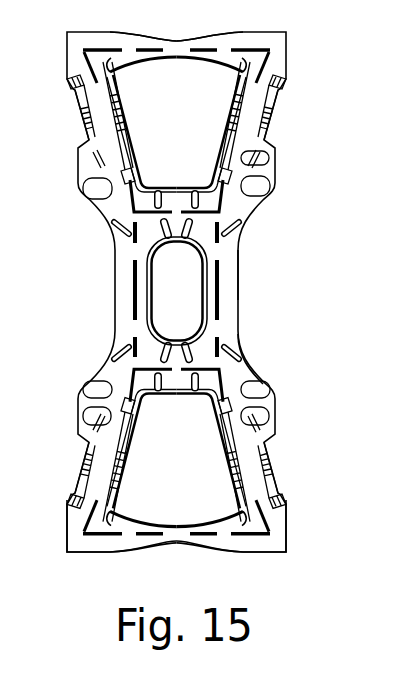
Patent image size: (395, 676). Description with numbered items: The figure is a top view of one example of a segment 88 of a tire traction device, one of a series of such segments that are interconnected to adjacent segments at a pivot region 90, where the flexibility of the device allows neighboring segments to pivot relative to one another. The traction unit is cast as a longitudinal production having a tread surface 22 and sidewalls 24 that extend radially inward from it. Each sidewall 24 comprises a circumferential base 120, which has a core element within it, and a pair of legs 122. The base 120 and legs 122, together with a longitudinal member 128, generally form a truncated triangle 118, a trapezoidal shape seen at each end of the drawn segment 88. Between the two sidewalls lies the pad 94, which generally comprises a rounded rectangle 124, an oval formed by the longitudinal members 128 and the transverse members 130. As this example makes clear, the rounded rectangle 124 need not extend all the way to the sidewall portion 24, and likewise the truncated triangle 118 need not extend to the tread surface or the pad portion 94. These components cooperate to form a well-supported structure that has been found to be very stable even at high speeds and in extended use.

The circumferential base 120 is at (178, 38).
The legs 122 is at (80, 108).
The truncated triangle 118 is at (256, 136).
The sidewall 24 is at (278, 188).
The longitudinal member 128 is at (175, 213).
The tread surface 22 is at (241, 248).
The transverse members 130 is at (224, 274).
The rounded rectangle 124 is at (213, 284).
The pad 94 is at (241, 311).
The segment 88 is at (258, 375).
The pivot region 90 is at (68, 522).